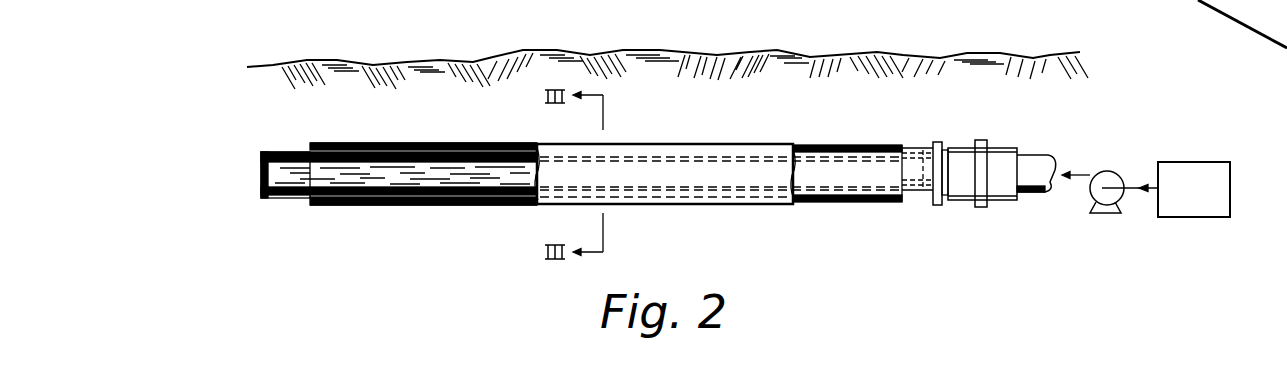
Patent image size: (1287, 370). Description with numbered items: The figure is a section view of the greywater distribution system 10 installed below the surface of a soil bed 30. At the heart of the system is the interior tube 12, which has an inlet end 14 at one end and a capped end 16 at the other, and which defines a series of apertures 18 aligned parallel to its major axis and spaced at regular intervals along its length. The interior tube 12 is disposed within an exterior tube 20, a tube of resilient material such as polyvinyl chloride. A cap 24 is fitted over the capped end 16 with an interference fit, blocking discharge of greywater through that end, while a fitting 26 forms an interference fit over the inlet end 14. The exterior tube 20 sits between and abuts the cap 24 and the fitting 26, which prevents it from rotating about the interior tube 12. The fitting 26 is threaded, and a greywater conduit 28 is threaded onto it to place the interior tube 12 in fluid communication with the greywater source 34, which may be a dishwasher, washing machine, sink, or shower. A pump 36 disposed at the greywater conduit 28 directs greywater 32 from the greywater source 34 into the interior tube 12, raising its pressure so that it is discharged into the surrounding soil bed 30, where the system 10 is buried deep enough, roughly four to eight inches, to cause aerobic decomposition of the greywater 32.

The greywater distribution system 10 is at (727, 213).
The interior tube 12 is at (867, 168).
The inlet end 14 is at (923, 158).
The capped end 16 is at (285, 193).
The apertures 18 is at (494, 162).
The exterior tube 20 is at (653, 145).
The cap 24 is at (262, 170).
The fitting 26 is at (938, 140).
The greywater conduit 28 is at (1030, 163).
The soil bed 30 is at (623, 50).
The greywater 32 is at (417, 182).
The greywater source 34 is at (1183, 197).
The pump 36 is at (1092, 196).